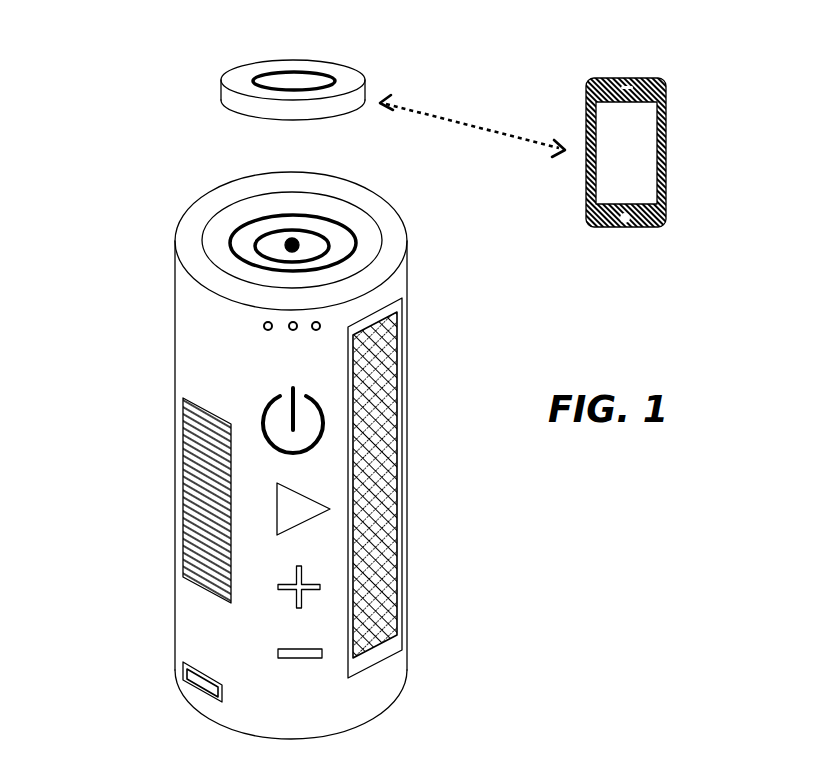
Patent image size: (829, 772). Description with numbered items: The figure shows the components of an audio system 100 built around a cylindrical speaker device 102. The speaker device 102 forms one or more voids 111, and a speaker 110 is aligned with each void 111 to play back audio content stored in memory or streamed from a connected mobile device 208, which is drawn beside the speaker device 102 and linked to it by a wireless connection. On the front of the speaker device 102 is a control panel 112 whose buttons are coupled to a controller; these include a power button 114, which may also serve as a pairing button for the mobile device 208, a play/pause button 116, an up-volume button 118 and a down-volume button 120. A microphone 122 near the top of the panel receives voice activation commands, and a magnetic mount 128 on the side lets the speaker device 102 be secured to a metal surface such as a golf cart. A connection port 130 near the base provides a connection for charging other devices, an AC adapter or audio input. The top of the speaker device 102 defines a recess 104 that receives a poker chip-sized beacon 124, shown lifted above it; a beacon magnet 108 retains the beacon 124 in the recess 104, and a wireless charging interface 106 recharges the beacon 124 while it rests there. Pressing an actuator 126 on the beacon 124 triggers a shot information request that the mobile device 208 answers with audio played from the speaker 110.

The audio system 100 is at (248, 454).
The speaker device 102 is at (407, 240).
The recess 104 is at (210, 240).
The wireless charging interface 106 is at (258, 220).
The beacon magnet 108 is at (295, 243).
The speaker 110 is at (387, 348).
The void 111 is at (387, 308).
The control panel 112 is at (271, 596).
The power button 114 is at (275, 405).
The play/pause button 116 is at (310, 512).
The up-volume button 118 is at (295, 583).
The down-volume button 120 is at (291, 658).
The microphone 122 is at (262, 325).
The beacon 124 is at (365, 80).
The actuator 126 is at (282, 78).
The magnetic mount 128 is at (200, 450).
The connection port 130 is at (185, 683).
The mobile device 208 is at (645, 78).